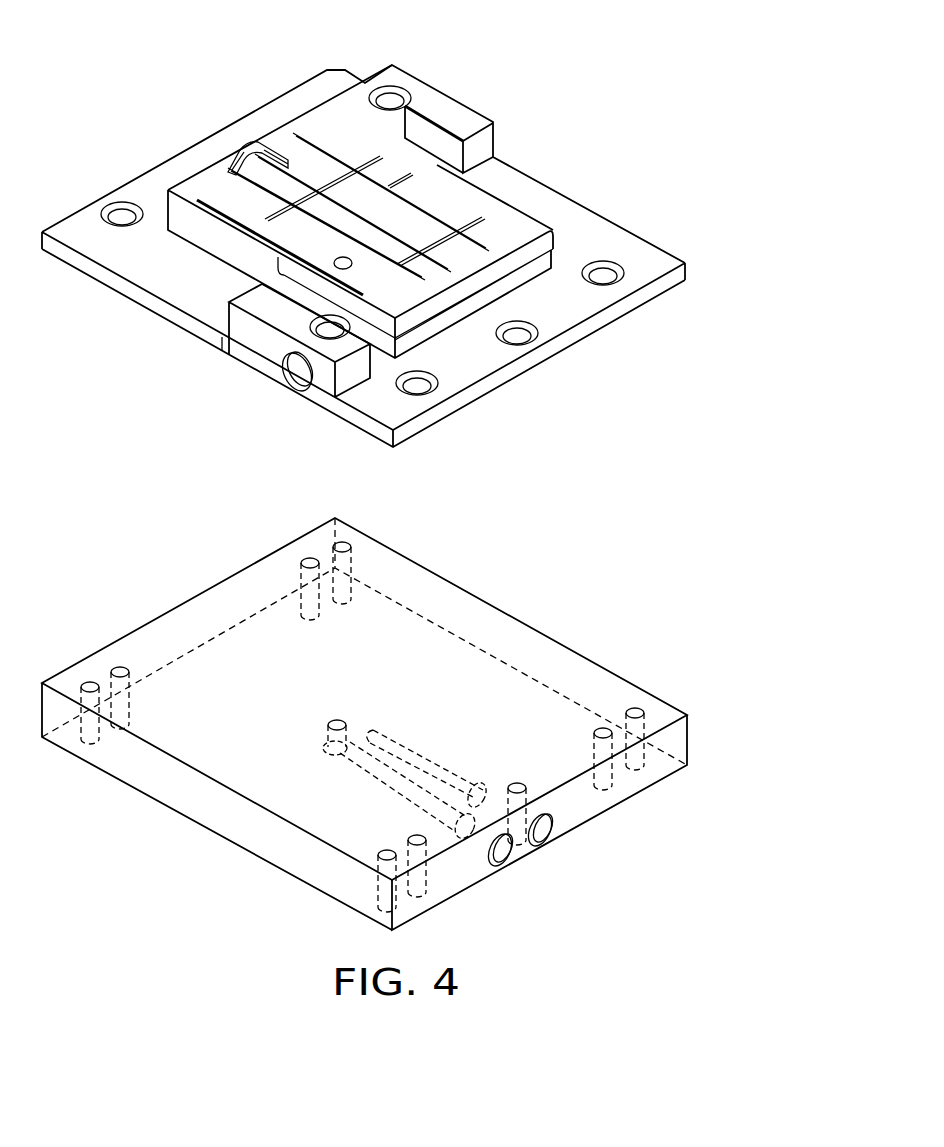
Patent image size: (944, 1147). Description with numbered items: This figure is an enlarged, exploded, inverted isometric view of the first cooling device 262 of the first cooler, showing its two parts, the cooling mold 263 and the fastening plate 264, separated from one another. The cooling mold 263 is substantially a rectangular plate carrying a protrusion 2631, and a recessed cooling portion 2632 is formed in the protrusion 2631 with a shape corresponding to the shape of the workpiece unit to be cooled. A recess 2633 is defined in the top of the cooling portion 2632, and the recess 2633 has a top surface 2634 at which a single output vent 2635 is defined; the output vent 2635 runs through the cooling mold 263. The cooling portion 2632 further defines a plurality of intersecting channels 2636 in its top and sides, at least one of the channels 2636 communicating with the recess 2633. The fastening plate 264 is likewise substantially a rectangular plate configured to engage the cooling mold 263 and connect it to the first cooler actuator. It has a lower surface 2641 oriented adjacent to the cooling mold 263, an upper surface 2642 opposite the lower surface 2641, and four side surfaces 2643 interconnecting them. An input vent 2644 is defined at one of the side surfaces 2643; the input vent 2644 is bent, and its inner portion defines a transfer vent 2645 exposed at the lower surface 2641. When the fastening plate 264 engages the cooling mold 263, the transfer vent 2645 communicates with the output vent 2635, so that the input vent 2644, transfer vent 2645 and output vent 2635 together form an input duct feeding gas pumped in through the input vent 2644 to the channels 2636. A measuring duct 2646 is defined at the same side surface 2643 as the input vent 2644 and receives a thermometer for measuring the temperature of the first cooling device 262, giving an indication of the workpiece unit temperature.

The first cooling device 262 is at (365, 34).
The cooling mold 263 is at (639, 223).
The protrusion 2631 is at (548, 224).
The cooling portion 2632 is at (437, 295).
The recess 2633 is at (521, 208).
The top surface 2634 is at (344, 260).
The output vent 2635 is at (421, 218).
The channels 2636 is at (226, 168).
The fastening plate 264 is at (553, 630).
The lower surface 2641 is at (457, 607).
The upper surface 2642 is at (636, 795).
The side surfaces 2643 is at (679, 741).
The input vent 2644 is at (497, 863).
The transfer vent 2645 is at (330, 720).
The measuring duct 2646 is at (543, 847).